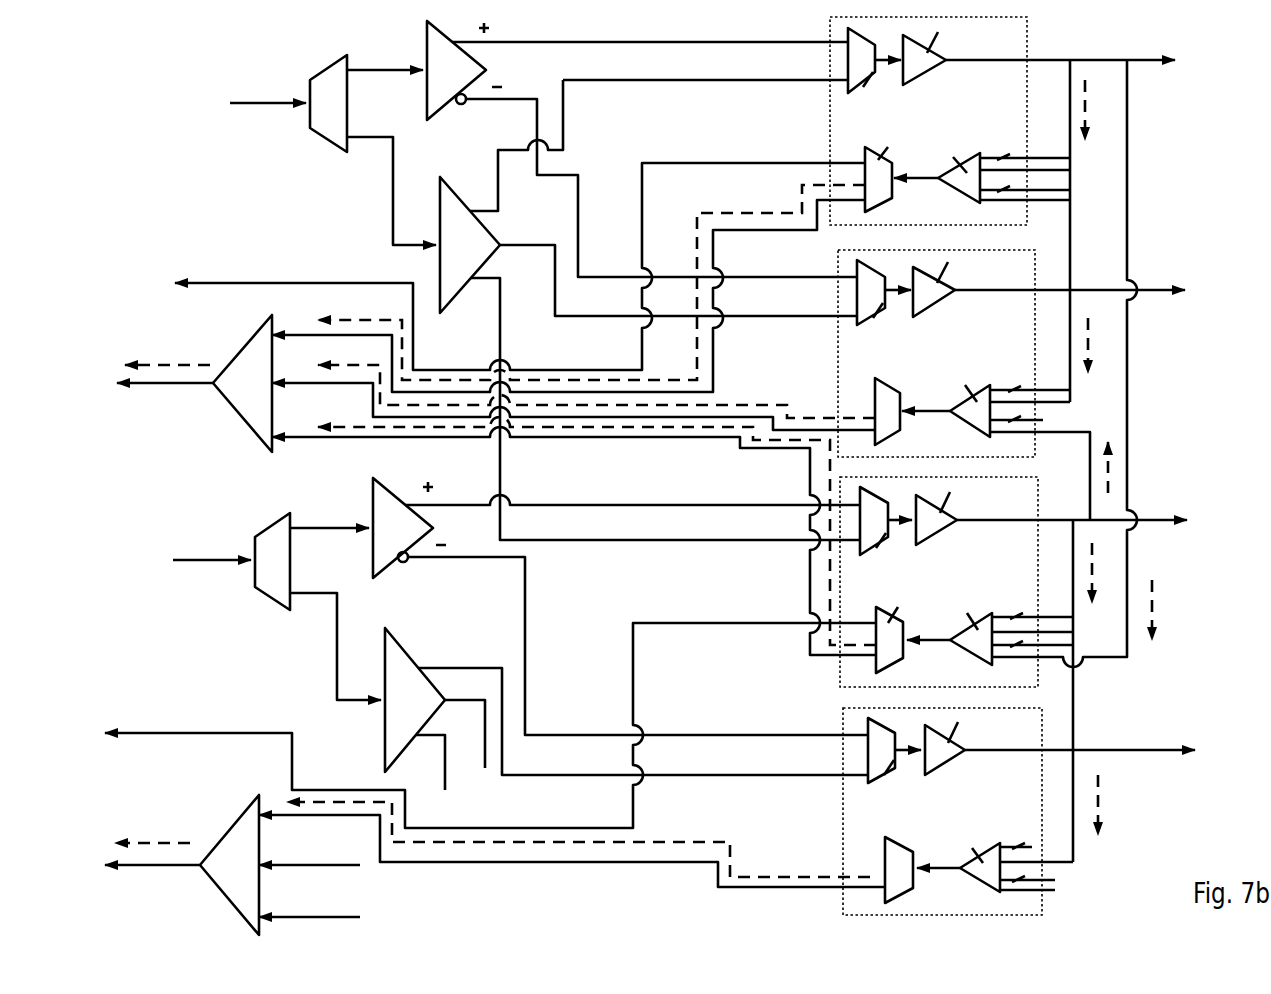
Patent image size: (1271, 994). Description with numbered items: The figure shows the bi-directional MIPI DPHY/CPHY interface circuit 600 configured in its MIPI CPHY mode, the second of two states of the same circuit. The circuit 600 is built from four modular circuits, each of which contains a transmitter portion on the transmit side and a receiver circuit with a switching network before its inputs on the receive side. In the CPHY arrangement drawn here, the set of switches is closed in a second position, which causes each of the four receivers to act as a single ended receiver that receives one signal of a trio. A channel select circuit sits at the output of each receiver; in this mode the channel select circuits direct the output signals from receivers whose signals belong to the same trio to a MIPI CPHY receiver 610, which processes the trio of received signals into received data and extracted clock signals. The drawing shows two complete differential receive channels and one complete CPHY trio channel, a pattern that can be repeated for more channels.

The MIPI DPHY/CPHY interface circuit 600 is at (638, 476).
The MIPI CPHY receiver 610 is at (270, 394).